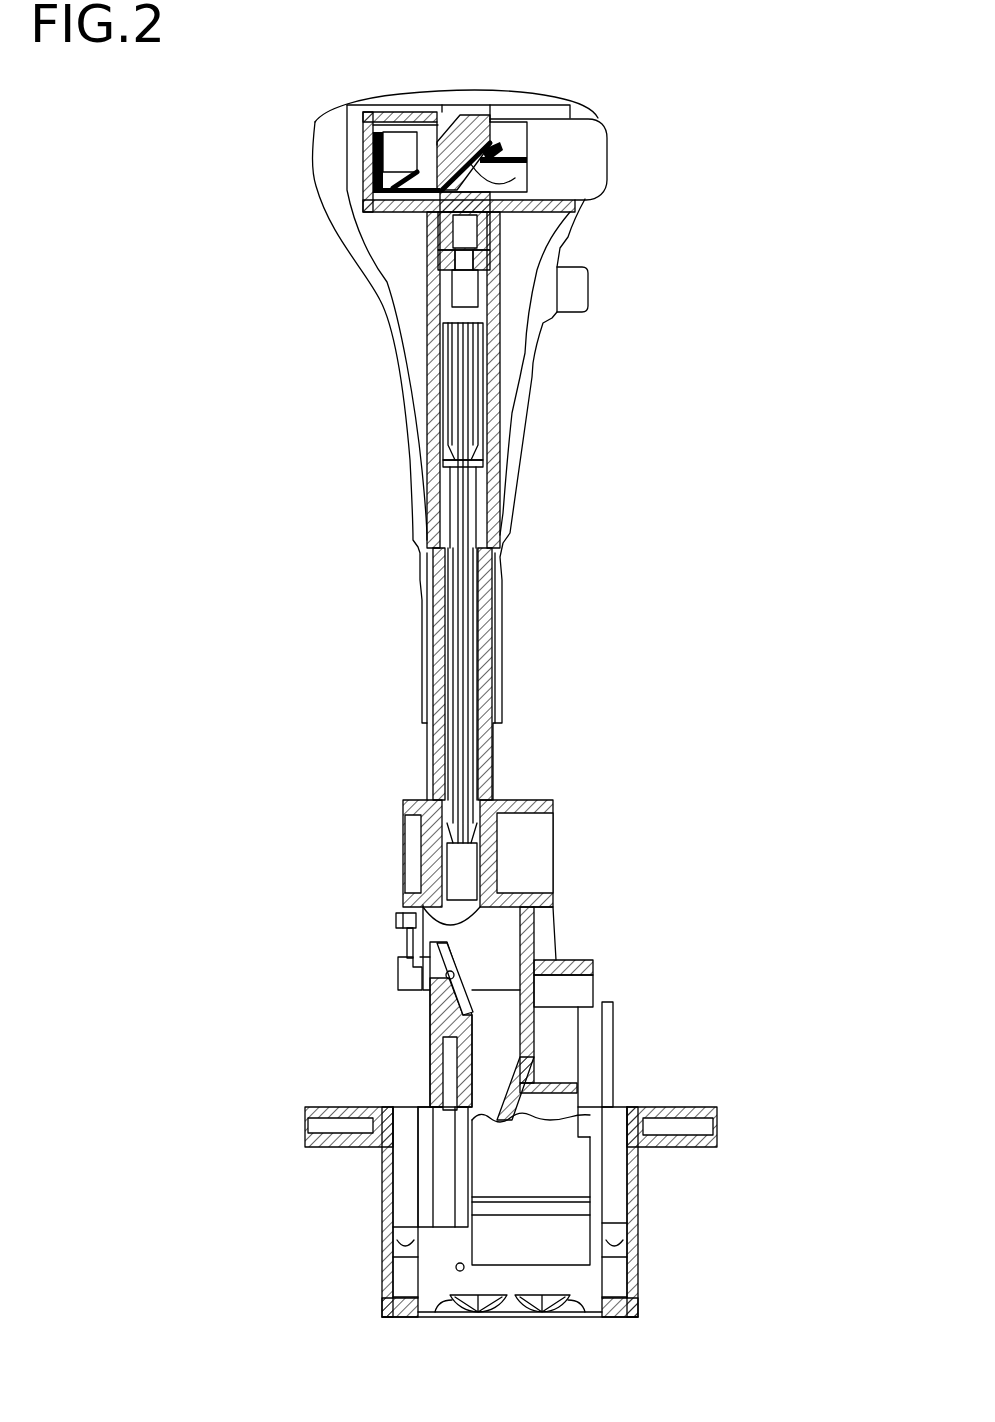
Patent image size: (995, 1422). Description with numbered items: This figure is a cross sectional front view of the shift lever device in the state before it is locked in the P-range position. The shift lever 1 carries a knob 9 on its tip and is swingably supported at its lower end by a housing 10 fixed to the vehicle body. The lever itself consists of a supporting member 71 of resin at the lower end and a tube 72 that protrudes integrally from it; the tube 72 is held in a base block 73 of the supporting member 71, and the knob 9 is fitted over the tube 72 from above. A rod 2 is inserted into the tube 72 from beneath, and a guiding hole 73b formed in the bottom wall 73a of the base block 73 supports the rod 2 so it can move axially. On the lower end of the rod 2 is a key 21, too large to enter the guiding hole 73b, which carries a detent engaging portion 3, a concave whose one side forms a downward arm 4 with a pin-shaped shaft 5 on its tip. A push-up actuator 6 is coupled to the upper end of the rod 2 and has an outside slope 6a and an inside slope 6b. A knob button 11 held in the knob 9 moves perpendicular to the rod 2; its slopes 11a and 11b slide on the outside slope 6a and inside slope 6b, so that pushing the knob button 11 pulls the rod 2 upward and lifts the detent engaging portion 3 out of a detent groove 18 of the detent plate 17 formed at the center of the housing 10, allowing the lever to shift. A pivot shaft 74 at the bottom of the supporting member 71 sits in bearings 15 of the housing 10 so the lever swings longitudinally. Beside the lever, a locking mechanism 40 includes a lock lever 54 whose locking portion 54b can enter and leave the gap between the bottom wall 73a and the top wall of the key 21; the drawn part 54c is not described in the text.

The shift lever 1 is at (548, 378).
The rod 2 is at (473, 577).
The detent engaging portion 3 is at (508, 938).
The arm 4 is at (464, 987).
The pin-shaped shaft 5 is at (399, 983).
The push-up actuator 6 is at (432, 246).
The outside slope 6a is at (447, 118).
The inside slope 6b is at (512, 158).
The knob 9 is at (580, 104).
The housing 10 is at (528, 1212).
The knob button 11 is at (609, 162).
The slope 11a is at (363, 203).
The slope 11b is at (595, 192).
The bearings 15 is at (408, 1240).
The detent plate 17 is at (431, 1073).
The detent groove 18 is at (471, 1013).
The key 21 is at (534, 923).
The locking mechanism 40 is at (403, 1035).
The lock lever 54 is at (297, 901).
The locking portion 54b is at (391, 913).
The fastener stem 54c is at (407, 940).
The supporting member 71 is at (609, 968).
The tube 72 is at (484, 643).
The base block 73 is at (514, 820).
The bottom wall 73a is at (464, 975).
The guiding hole 73b is at (479, 888).
The pivot shaft 74 is at (401, 1277).